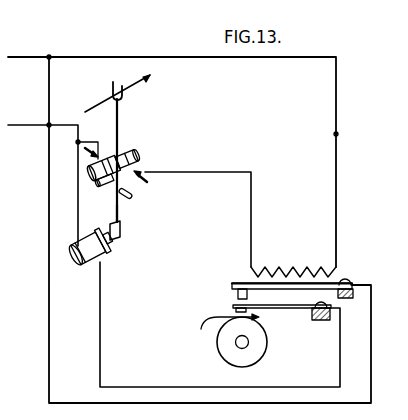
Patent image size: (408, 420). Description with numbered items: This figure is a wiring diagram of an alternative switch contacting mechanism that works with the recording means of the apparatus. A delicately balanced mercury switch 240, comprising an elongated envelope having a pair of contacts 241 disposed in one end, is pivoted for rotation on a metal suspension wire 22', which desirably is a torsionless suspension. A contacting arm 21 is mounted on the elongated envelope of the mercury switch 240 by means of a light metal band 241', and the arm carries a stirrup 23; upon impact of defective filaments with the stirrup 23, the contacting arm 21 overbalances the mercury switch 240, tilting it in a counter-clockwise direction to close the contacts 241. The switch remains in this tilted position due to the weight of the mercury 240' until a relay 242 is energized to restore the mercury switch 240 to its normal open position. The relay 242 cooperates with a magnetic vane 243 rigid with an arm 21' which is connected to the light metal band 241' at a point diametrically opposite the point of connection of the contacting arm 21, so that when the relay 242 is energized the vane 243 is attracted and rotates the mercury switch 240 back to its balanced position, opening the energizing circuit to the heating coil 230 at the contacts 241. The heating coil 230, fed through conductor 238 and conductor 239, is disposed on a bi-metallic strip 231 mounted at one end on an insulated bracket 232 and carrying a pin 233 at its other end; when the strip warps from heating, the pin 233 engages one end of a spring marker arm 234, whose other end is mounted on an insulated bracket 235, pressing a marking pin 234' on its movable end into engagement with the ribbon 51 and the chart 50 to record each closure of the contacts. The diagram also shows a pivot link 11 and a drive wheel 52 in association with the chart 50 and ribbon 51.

The pivot link 11 is at (151, 77).
The contacting arm 21 is at (136, 160).
The arm 21' is at (140, 209).
The metal suspension wire 22' is at (154, 185).
The stirrup 23 is at (124, 80).
The chart 50 is at (219, 371).
The ribbon 51 is at (223, 331).
The drive wheel 52 is at (250, 357).
The heating coil 230 is at (283, 267).
The bi-metallic strip 231 is at (238, 283).
The insulated bracket 232 is at (352, 288).
The pin 233 is at (238, 296).
The spring marker arm 234 is at (282, 323).
The marking pin 234' is at (203, 311).
The insulated bracket 235 is at (329, 321).
The conductor 238 is at (335, 134).
The conductor 239 is at (252, 203).
The mercury switch 240 is at (150, 148).
The mercury 240' is at (158, 157).
The pair of contacts 241 is at (65, 172).
The light metal band 241' is at (87, 121).
The relay 242 is at (82, 259).
The magnetic vane 243 is at (122, 236).